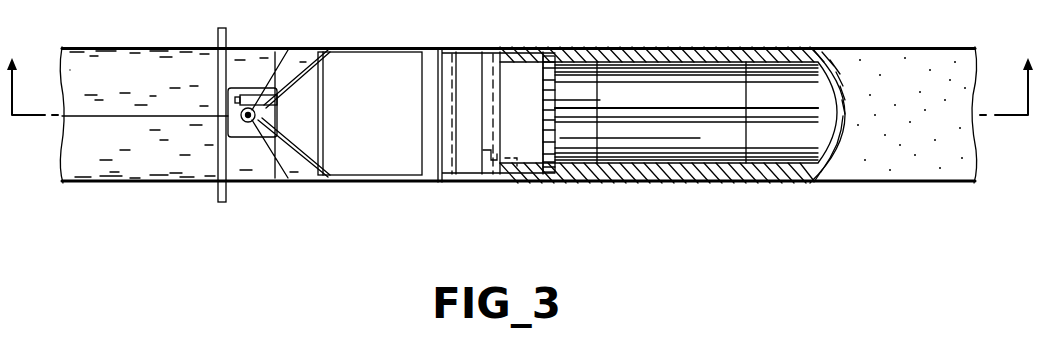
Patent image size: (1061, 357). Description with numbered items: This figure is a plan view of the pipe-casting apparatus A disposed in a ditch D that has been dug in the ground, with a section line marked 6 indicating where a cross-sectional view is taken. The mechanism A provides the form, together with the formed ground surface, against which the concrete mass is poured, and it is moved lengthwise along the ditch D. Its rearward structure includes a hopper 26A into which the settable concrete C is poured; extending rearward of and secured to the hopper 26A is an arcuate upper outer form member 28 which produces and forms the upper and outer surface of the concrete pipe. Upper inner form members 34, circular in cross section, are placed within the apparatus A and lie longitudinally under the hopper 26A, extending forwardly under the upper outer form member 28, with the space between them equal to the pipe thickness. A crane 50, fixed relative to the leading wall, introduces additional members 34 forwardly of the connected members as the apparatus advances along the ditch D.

The section line 6- 6 is at (518, 66).
The ditch D is at (125, 62).
The crane 50 is at (243, 122).
The mechanism A is at (428, 166).
The hopper 26A is at (467, 65).
The upper outer form member 28 is at (527, 68).
The concrete and cementitious material C is at (650, 178).
The upper inner form members 34 is at (668, 143).